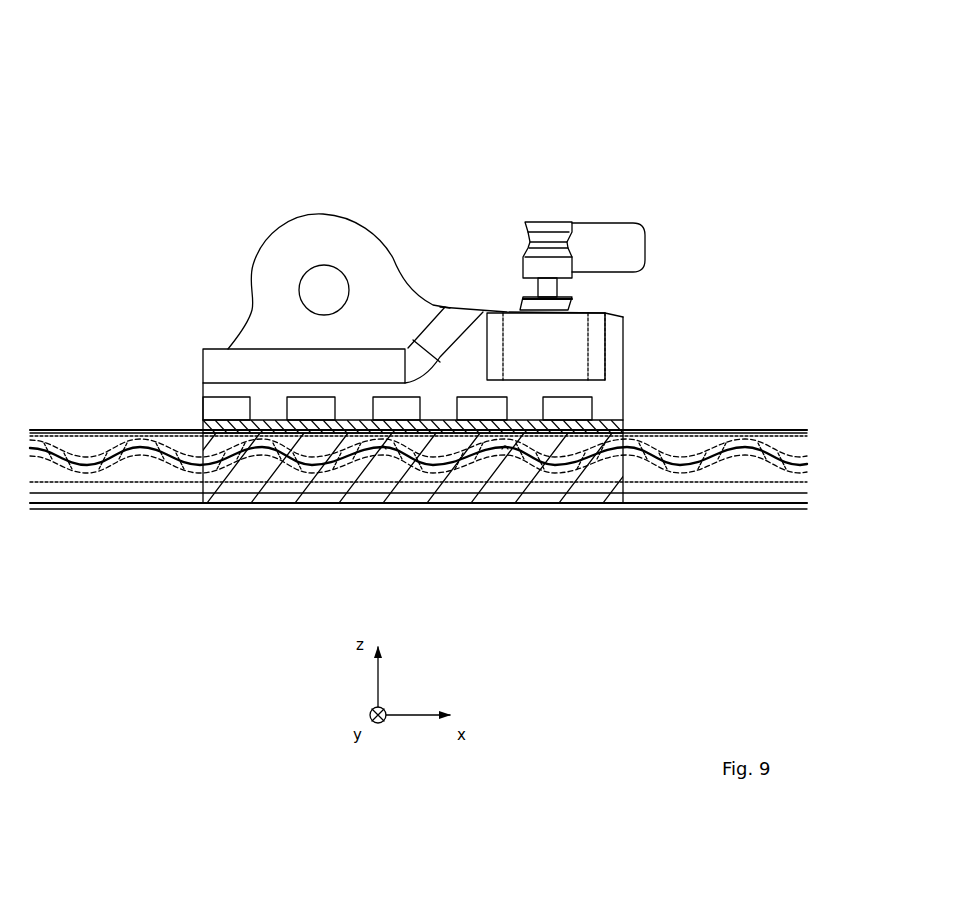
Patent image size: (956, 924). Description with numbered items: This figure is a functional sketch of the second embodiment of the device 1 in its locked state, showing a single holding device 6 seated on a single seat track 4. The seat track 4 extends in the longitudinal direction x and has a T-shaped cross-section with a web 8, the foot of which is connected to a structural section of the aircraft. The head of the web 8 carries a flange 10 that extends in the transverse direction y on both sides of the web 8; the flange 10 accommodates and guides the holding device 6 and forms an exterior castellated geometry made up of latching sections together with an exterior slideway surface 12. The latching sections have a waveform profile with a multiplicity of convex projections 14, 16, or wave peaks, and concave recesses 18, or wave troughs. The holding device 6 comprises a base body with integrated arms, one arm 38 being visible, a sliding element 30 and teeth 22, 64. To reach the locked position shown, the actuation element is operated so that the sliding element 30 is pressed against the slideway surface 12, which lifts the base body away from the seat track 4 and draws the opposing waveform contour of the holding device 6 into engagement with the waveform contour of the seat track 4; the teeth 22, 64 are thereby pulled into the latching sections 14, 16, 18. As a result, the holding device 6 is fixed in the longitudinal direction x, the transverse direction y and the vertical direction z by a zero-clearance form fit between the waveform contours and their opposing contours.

The device 1 is at (123, 73).
The seat track 4 is at (705, 432).
The holding device 6 is at (250, 265).
The web 8 is at (743, 470).
The flange 10 is at (745, 440).
The slideway surface 12 is at (734, 436).
The convex projection 14 is at (85, 463).
The convex projection 16 is at (203, 445).
The concave recess 18 is at (148, 450).
The tooth 22 is at (390, 447).
The sliding element 30 is at (210, 407).
The arm 38 is at (197, 435).
The tooth 64 is at (507, 445).